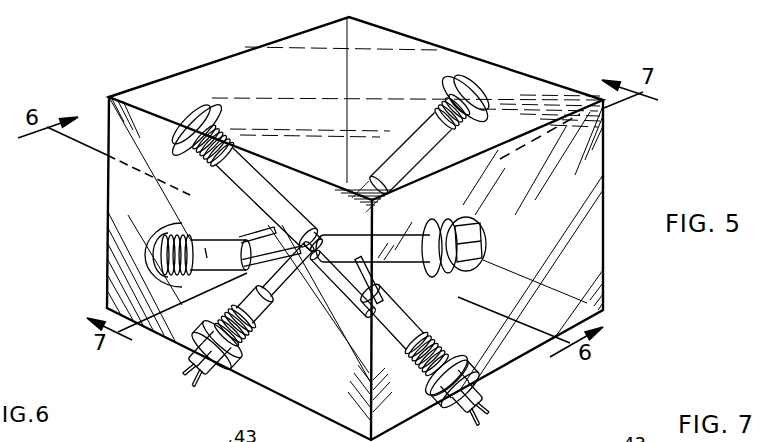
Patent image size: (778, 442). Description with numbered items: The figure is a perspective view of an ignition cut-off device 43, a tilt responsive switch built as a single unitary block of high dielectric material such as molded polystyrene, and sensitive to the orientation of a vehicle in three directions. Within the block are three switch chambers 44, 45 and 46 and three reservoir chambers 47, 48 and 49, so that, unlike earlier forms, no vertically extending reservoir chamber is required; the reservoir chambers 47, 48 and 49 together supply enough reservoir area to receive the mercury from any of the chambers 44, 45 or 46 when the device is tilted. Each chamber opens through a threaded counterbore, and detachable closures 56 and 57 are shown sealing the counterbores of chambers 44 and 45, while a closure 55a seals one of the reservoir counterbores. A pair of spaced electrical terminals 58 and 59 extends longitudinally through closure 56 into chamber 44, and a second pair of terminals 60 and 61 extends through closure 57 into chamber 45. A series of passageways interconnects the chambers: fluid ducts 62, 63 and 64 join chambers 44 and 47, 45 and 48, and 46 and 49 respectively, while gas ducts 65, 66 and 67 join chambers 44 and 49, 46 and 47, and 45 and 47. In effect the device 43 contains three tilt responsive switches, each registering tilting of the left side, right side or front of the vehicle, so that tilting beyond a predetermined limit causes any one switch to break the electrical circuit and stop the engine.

The ignition cut-off device 43 is at (480, 61).
The chamber 44 is at (403, 327).
The chamber 45 is at (260, 313).
The chamber 46 is at (212, 243).
The reservoir chamber 47 is at (253, 183).
The reservoir chamber 48 is at (408, 152).
The reservoir chamber 49 is at (415, 232).
The closure 55a is at (487, 242).
The detachable closure 56 is at (430, 405).
The detachable closure 57 is at (208, 373).
The electrical terminal 58 is at (477, 405).
The electrical terminal 59 is at (468, 407).
The electrical terminal 60 is at (175, 385).
The electrical terminal 61 is at (172, 365).
The fluid passageway 62 is at (341, 290).
The fluid passageway 63 is at (282, 292).
The fluid passageway 64 is at (257, 267).
The gas passageway 65 is at (380, 297).
The gas passageway 66 is at (296, 245).
The gas passageway 67 is at (253, 233).